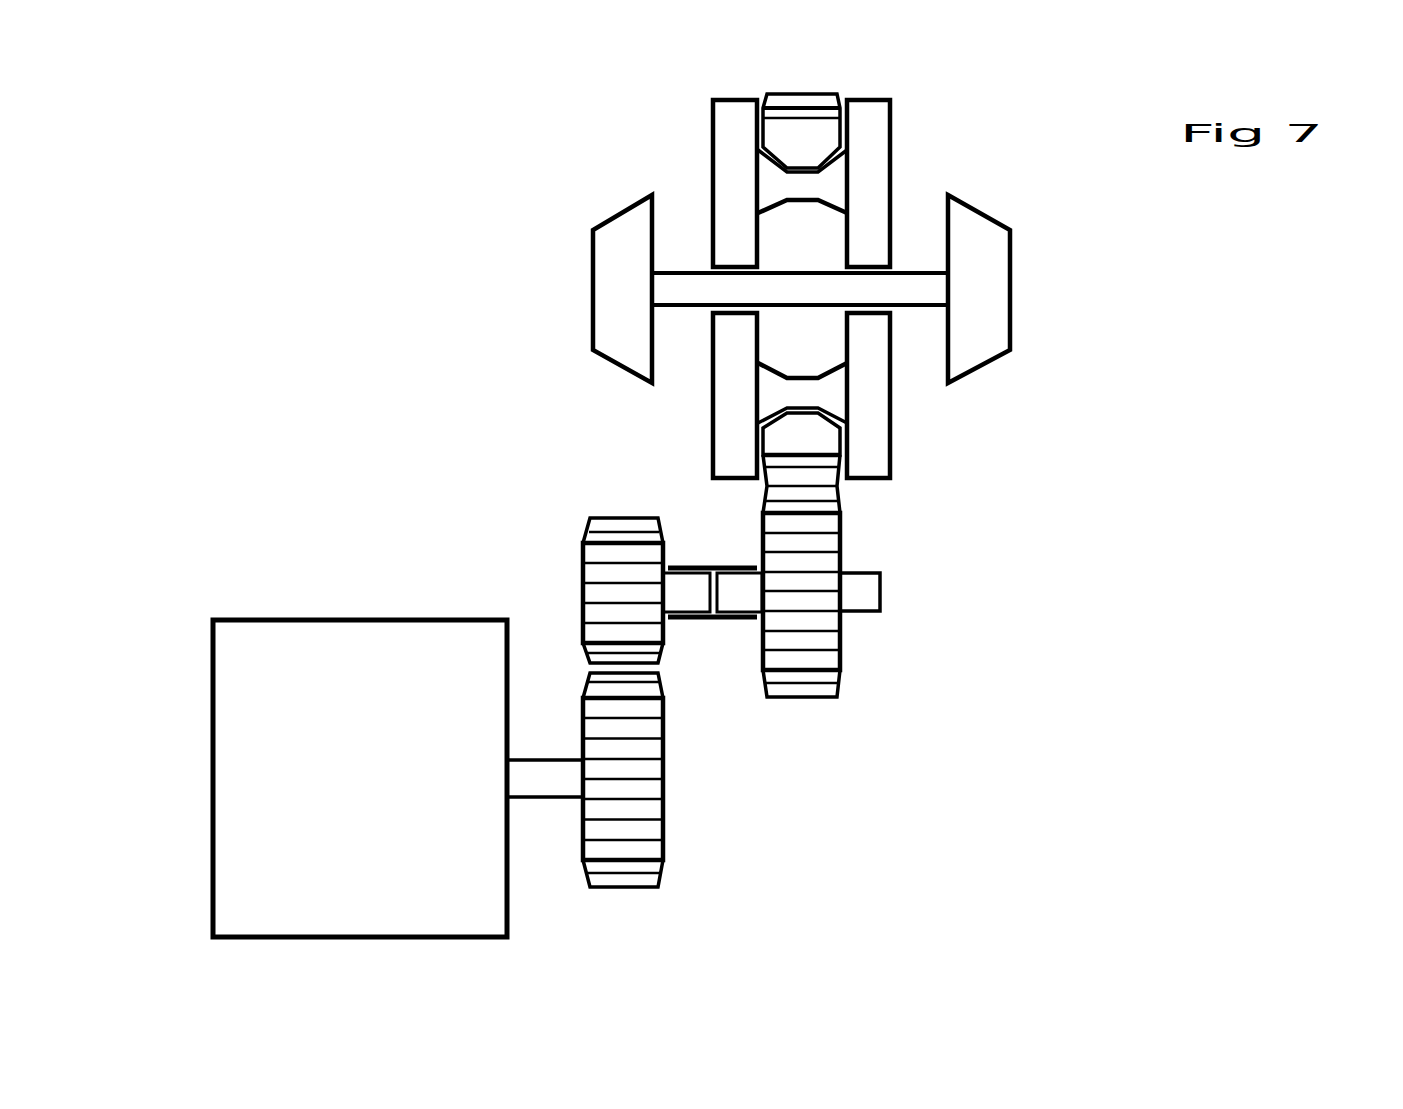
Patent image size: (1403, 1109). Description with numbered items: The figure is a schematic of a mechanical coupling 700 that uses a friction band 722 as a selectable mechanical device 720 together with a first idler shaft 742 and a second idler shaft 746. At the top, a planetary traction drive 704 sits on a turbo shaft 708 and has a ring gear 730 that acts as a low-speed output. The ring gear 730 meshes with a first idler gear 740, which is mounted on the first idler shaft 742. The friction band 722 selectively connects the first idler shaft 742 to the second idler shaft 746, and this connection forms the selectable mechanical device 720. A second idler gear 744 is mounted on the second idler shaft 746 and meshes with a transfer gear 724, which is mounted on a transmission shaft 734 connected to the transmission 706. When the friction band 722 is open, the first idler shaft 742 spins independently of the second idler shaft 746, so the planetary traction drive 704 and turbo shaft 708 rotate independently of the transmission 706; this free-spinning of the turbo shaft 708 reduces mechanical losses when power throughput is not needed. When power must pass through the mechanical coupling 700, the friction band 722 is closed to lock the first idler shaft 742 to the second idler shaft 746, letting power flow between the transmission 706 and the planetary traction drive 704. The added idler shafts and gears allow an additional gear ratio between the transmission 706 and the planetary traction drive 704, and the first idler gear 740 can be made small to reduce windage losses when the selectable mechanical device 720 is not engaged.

The mechanical coupling 700 is at (323, 228).
The planetary traction drive 704 is at (906, 405).
The transmission 706 is at (360, 778).
The turbo shaft 708 is at (685, 285).
The selectable mechanical device 720 is at (742, 548).
The friction band 722 is at (732, 620).
The transfer gear 724 is at (618, 825).
The ring gear 730 is at (797, 438).
The transmission shaft 734 is at (553, 770).
The first idler gear 740 is at (797, 638).
The first idler shaft 742 is at (863, 588).
The second idler gear 744 is at (630, 558).
The second idler shaft 746 is at (675, 594).